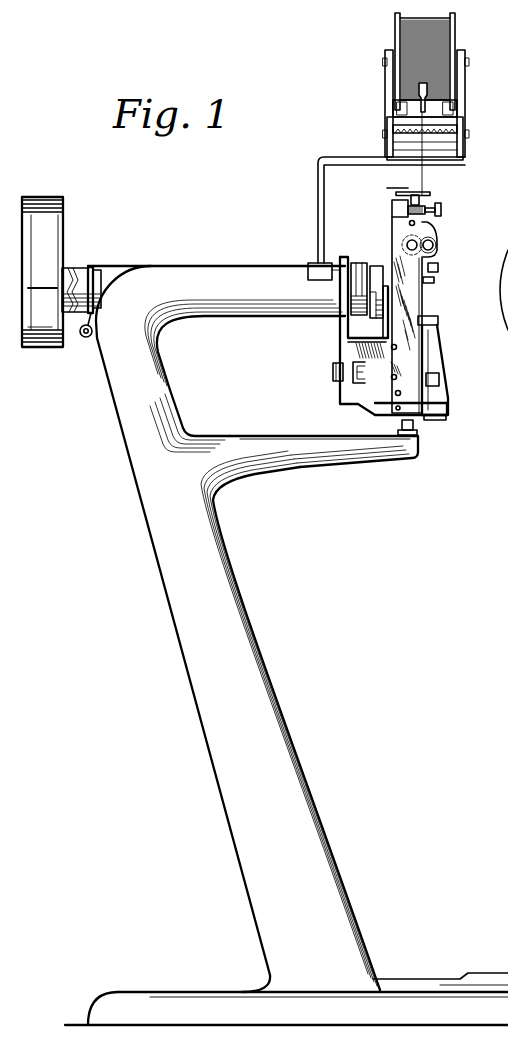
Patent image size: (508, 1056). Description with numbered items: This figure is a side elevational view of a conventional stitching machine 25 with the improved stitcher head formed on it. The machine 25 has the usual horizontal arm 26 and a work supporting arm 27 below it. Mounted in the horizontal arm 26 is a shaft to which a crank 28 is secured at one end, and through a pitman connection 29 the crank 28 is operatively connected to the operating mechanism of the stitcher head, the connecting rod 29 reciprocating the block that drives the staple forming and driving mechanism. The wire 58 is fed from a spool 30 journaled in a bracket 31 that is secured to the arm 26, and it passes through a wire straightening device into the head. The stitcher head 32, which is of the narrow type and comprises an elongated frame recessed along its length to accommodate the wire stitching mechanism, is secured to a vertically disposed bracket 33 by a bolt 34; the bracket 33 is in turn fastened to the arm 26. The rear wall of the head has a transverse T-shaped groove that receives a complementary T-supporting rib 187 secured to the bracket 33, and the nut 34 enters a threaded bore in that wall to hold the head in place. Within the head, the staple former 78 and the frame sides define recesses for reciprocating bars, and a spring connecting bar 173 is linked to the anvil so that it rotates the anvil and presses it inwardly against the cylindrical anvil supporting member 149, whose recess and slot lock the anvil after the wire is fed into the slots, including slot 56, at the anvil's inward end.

The stitching machine 25 is at (250, 643).
The horizontal arm 26 is at (208, 273).
The work supporting arm 27 is at (327, 459).
The crank 28 is at (356, 262).
The pitman connection 29 is at (377, 265).
The spool 30 is at (453, 38).
The bracket 31 is at (385, 80).
The stitcher head 32 is at (423, 303).
The vertically disposed bracket 33 is at (344, 352).
The bolt 34 is at (333, 375).
The slot 56 is at (432, 228).
The wire 58 is at (424, 176).
The staple former 78 is at (414, 427).
The anvil supporting member 149 is at (433, 414).
The spring connecting bar 173 is at (446, 360).
The T-supporting rib 187 is at (356, 378).